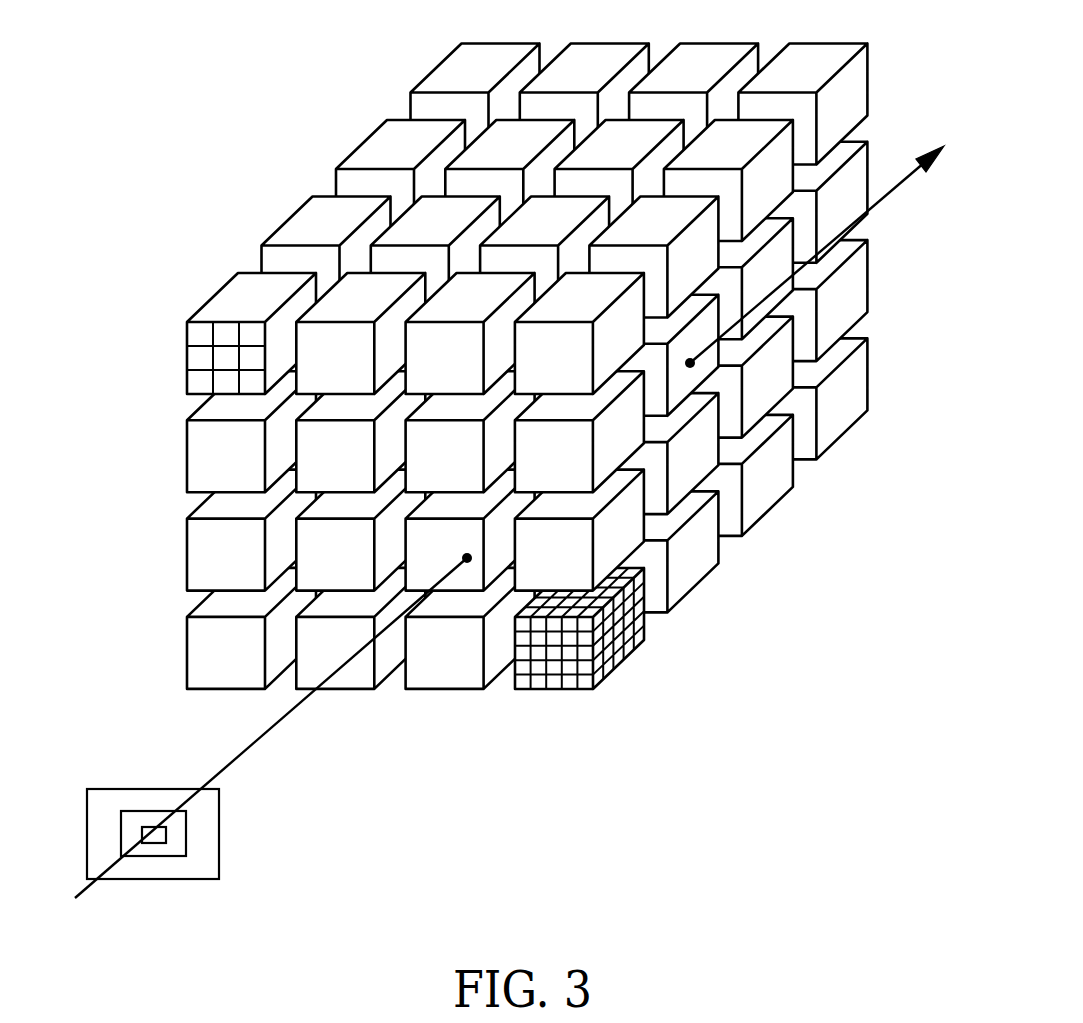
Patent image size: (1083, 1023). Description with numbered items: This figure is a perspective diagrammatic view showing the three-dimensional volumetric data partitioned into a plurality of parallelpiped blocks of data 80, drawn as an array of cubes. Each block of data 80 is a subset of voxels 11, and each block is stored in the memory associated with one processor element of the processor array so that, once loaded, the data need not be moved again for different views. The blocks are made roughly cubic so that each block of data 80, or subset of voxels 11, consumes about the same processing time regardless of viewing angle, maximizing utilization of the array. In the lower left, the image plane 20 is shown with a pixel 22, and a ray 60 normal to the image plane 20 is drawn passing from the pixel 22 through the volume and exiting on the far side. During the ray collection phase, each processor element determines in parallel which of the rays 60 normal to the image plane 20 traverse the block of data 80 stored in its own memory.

The voxels 11 is at (607, 688).
The image plane 20 is at (187, 856).
The pixels 22 is at (166, 833).
The rays 60 is at (243, 755).
The block of data 80 is at (632, 650).